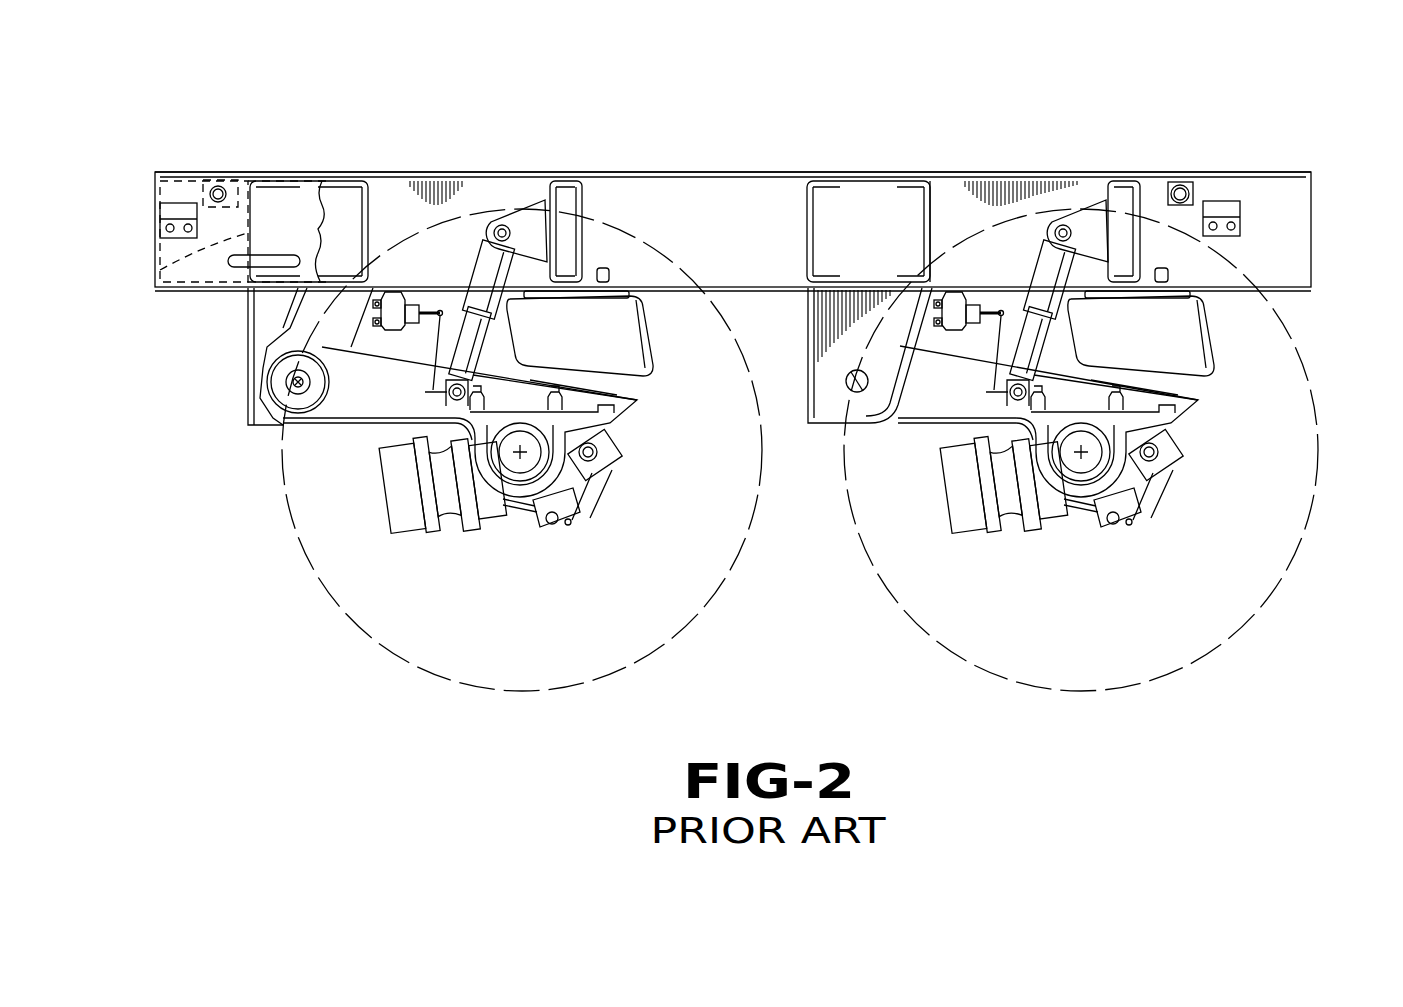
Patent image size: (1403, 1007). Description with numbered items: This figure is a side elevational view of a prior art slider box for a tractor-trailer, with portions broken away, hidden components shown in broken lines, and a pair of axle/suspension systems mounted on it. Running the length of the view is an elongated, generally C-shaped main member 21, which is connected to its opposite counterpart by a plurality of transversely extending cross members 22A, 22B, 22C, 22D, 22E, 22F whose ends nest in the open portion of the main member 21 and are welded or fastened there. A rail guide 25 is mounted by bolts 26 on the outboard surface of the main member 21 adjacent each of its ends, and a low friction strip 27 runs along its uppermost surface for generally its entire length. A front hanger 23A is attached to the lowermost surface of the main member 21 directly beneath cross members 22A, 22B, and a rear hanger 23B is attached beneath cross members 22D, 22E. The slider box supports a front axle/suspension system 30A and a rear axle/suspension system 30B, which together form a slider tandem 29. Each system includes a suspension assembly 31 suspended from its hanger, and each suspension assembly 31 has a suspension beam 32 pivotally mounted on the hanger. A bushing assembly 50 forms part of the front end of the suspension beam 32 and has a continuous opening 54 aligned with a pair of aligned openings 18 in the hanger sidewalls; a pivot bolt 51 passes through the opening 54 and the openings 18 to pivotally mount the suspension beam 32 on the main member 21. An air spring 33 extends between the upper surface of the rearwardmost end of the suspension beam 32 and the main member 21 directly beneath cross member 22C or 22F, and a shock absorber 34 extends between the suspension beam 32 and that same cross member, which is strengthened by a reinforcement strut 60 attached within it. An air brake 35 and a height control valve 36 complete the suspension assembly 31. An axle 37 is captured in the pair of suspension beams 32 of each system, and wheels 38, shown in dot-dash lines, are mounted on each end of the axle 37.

The aligned openings 18 is at (849, 372).
The main member 21 is at (190, 292).
The cross member 22A is at (243, 235).
The cross member 22B is at (382, 218).
The cross member 22C is at (546, 181).
The cross member 22D is at (800, 220).
The cross member 22E is at (935, 221).
The cross member 22F is at (1105, 181).
The front hanger 23A is at (245, 396).
The rear hanger 23B is at (810, 420).
The rail guide 25 is at (178, 209).
The bolts 26 is at (172, 228).
The low friction strip 27 is at (176, 170).
The slider tandem 29 is at (857, 138).
The front axle/suspension system 30A is at (443, 532).
The rear axle/suspension system 30B is at (1004, 532).
The suspension assembly 31 is at (630, 408).
The suspension beam 32 is at (360, 412).
The air spring 33 is at (585, 328).
The shock absorber 34 is at (478, 300).
The air brake 35 is at (385, 472).
The height control valve 36 is at (389, 333).
The axle 37 is at (520, 452).
The wheels 38 is at (287, 497).
The bushing assembly 50 is at (286, 404).
The pivot bolt 51 is at (297, 380).
The continuous opening 54 is at (293, 380).
The reinforcement strut 60 is at (566, 200).